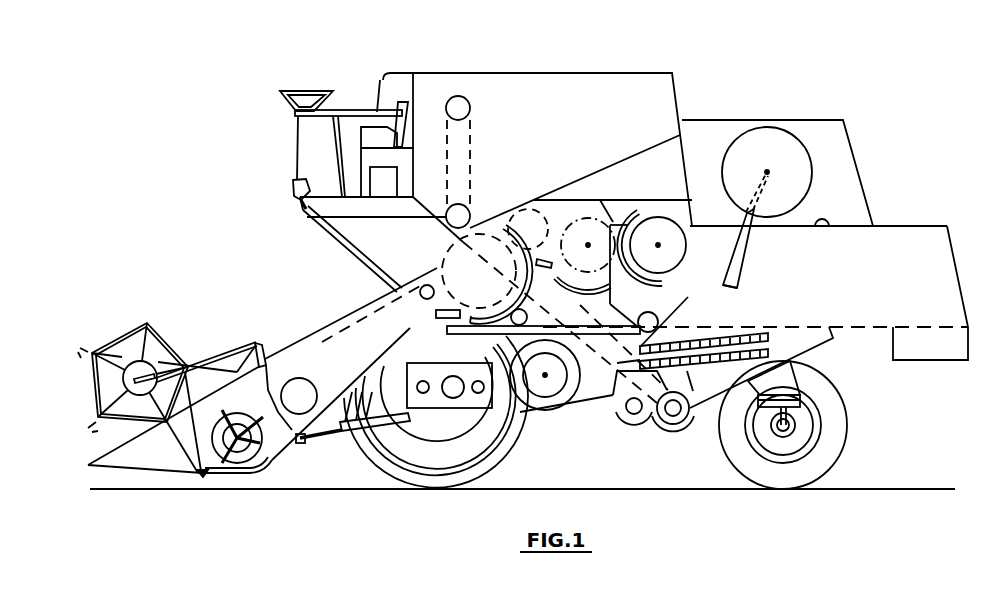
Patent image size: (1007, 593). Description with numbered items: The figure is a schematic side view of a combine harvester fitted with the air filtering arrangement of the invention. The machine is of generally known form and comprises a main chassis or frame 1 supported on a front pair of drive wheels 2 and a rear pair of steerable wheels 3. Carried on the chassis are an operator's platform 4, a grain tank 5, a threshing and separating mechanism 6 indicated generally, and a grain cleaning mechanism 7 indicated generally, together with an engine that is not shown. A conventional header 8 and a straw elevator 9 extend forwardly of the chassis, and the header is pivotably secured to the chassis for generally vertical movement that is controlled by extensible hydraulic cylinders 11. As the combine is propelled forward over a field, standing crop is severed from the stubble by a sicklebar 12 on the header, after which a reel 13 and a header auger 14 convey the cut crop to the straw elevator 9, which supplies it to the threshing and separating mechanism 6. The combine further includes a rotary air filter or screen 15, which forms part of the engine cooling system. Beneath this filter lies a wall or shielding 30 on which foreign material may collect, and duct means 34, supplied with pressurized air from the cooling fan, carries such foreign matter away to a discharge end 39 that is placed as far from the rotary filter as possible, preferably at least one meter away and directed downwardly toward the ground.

The main chassis or frame 1 is at (552, 316).
The front pair of drive wheels 2 is at (494, 466).
The rear pair of steerable wheels 3 is at (735, 463).
The operator's platform 4 is at (296, 200).
The grain tank 5 is at (631, 82).
The threshing and separating mechanism 6 is at (624, 205).
The grain cleaning mechanism 7 is at (780, 324).
The header 8 is at (227, 338).
The straw elevator 9 is at (315, 333).
The extensible hydraulic cylinders 11 is at (340, 446).
The sicklebar 12 is at (200, 478).
The reel 13 is at (114, 340).
The header auger 14 is at (240, 415).
The rotary air filter or screen 15 is at (816, 126).
The wall or shielding 30 is at (826, 228).
The duct means 34 is at (752, 258).
The discharge end 39 is at (733, 289).